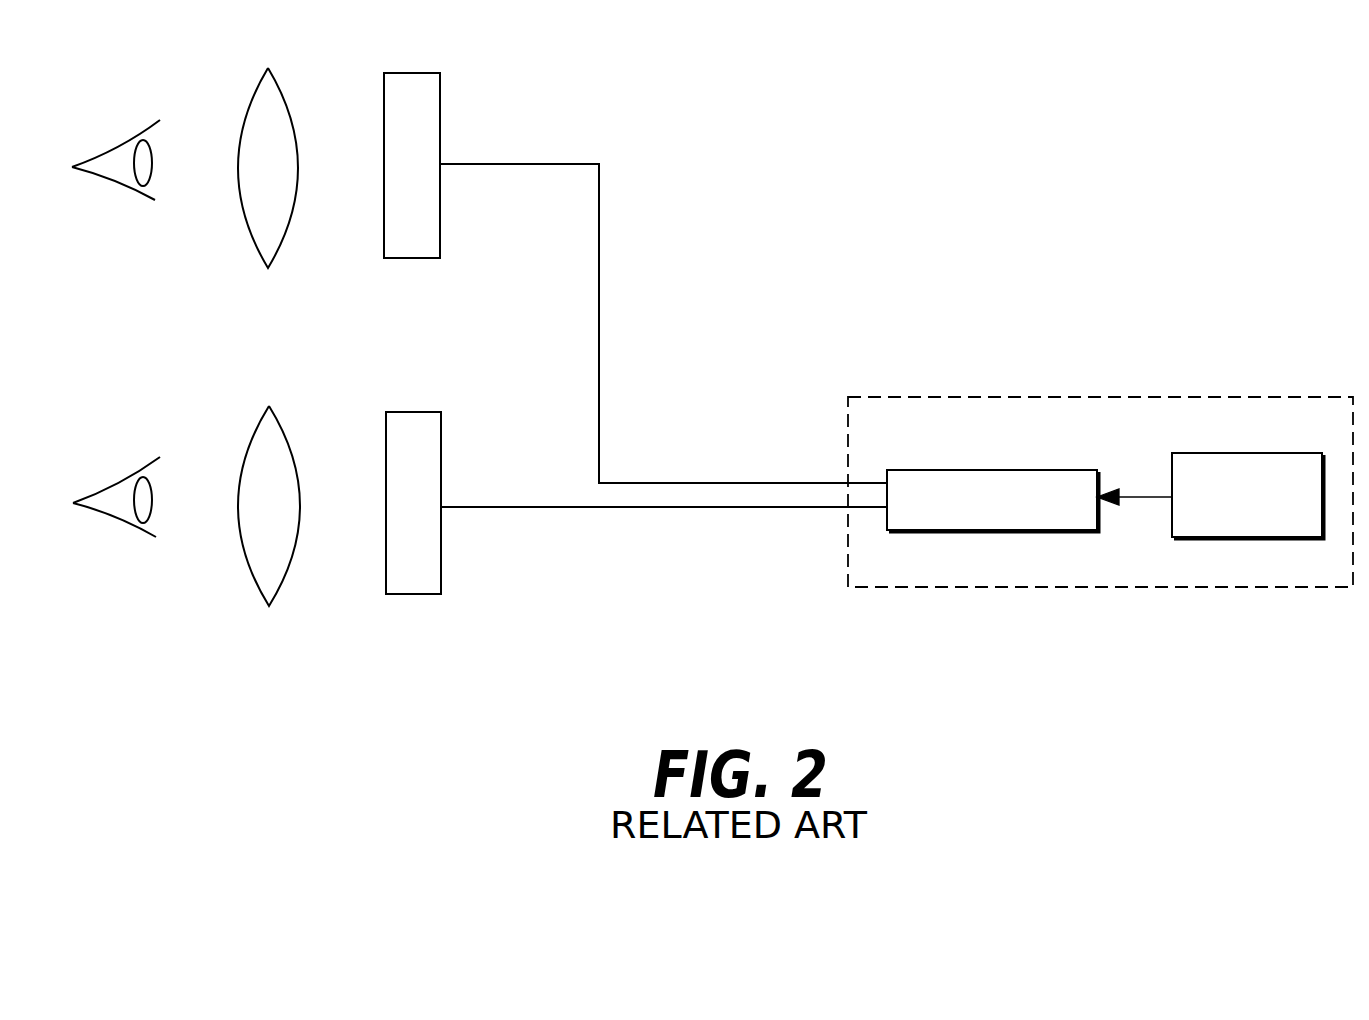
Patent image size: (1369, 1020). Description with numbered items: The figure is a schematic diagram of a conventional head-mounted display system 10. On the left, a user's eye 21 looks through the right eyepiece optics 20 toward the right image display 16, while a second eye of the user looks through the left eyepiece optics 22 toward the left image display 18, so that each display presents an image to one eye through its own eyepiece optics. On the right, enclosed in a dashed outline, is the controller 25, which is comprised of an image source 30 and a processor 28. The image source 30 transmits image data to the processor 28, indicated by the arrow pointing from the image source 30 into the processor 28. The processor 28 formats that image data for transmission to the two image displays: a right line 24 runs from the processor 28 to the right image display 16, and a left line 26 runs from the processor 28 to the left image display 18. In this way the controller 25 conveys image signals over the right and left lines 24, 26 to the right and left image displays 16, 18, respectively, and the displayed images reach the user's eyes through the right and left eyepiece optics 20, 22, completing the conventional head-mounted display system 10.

The head-mounted display system 10 is at (650, 215).
The right image display 16 is at (440, 98).
The left image display 18 is at (441, 567).
The right eyepiece optics 20 is at (283, 100).
The user's eye 21 is at (117, 150).
The left eyepiece optics 22 is at (117, 490).
The right line 24 is at (715, 483).
The controller 25 is at (920, 390).
The left line 26 is at (717, 507).
The processor 28 is at (1037, 470).
The image source 30 is at (1267, 453).